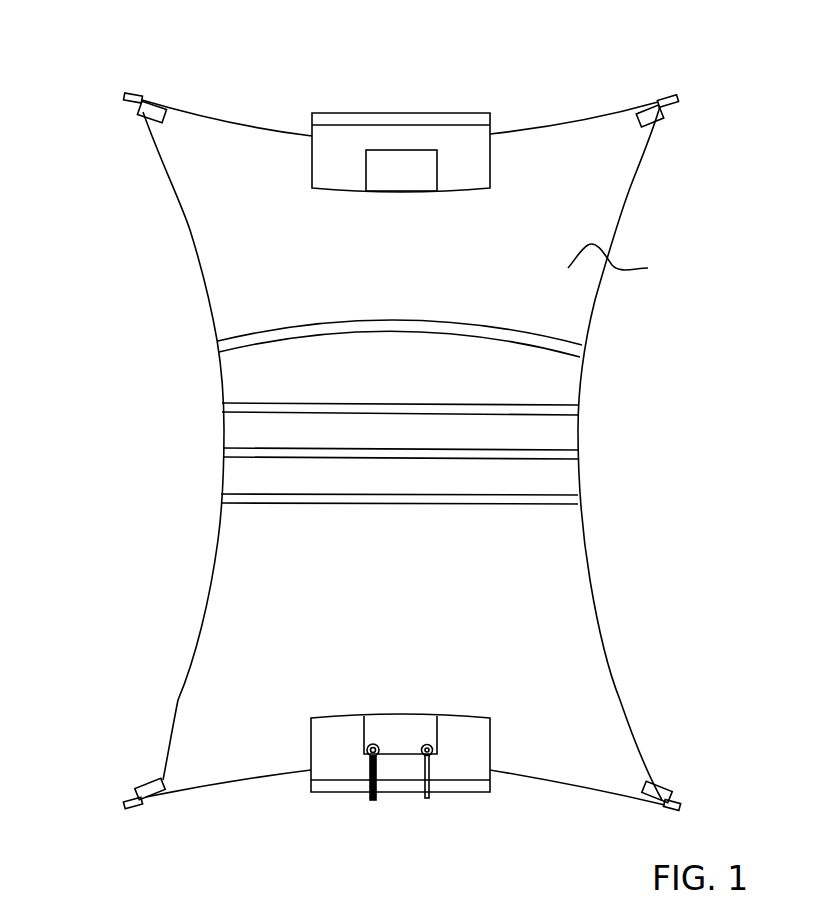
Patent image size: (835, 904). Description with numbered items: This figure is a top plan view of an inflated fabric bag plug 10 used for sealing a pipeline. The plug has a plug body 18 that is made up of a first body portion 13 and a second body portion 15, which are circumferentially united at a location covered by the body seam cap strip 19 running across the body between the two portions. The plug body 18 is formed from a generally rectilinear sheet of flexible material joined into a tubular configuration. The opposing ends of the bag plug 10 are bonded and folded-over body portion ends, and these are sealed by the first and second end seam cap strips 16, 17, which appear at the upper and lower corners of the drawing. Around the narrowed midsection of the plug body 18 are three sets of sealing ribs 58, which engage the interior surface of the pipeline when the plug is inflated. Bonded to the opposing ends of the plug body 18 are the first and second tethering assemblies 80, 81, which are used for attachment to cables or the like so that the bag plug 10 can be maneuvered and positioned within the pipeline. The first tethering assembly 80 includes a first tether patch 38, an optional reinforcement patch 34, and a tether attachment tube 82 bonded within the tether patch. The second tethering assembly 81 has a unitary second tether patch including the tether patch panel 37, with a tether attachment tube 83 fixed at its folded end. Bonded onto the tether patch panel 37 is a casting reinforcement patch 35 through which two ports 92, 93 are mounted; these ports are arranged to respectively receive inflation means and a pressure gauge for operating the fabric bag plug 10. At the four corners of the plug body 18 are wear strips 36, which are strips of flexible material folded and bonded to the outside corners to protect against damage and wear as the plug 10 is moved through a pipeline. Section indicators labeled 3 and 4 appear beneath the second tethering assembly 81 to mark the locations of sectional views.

The fabric bag plug 10 is at (630, 209).
The first body portion 13 is at (272, 206).
The second body portion 15 is at (293, 631).
The first end seam cap strip 16 is at (153, 120).
The second end seam cap strip 17 is at (150, 788).
The plug body 18 is at (630, 264).
The body seam cap strip 19 is at (268, 330).
The reinforcement patch 34 is at (395, 164).
The casting reinforcement patch 35 is at (408, 729).
The wear strips 36 is at (130, 95).
The tether patch panel 37 is at (482, 732).
The first tether patch 38 is at (482, 168).
The sealing ribs 58 is at (257, 448).
The first tethering assembly 80 is at (419, 96).
The second tethering assembly 81 is at (413, 795).
The tether attachment tube 82 is at (310, 118).
The tether attachment tube 83 is at (493, 788).
The port 92 is at (370, 746).
The port 93 is at (430, 745).
The section line 3 is at (398, 900).
The section line 4 is at (398, 900).